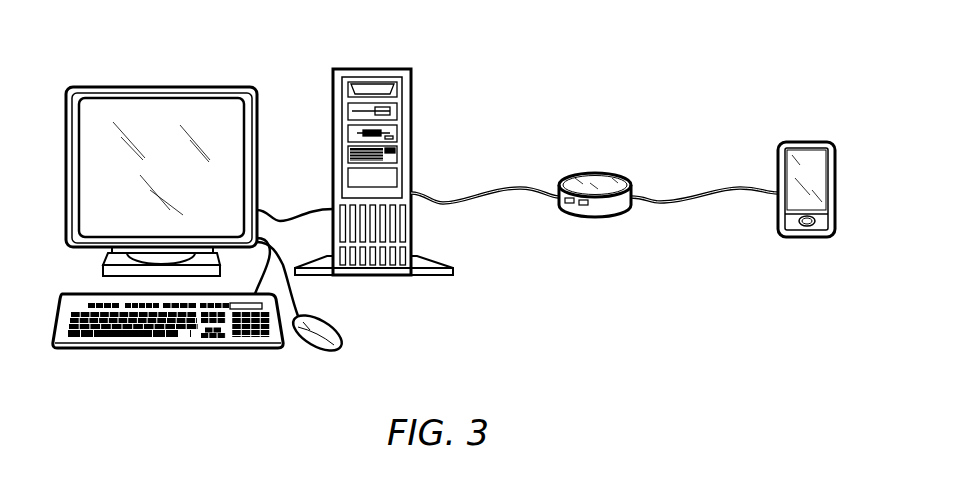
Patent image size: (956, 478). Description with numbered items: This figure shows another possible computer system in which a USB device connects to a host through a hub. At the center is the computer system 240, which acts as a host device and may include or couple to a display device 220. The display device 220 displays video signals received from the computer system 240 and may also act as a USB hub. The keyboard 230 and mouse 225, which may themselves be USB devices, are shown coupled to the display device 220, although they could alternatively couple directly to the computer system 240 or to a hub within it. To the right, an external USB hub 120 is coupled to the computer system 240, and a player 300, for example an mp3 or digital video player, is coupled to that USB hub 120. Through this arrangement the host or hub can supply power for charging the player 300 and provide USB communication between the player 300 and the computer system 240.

The USB hub 120 is at (597, 173).
The display device 220 is at (145, 87).
The mouse 225 is at (330, 348).
The keyboard 230 is at (155, 348).
The computer system 240 is at (379, 67).
The player 300 is at (807, 140).